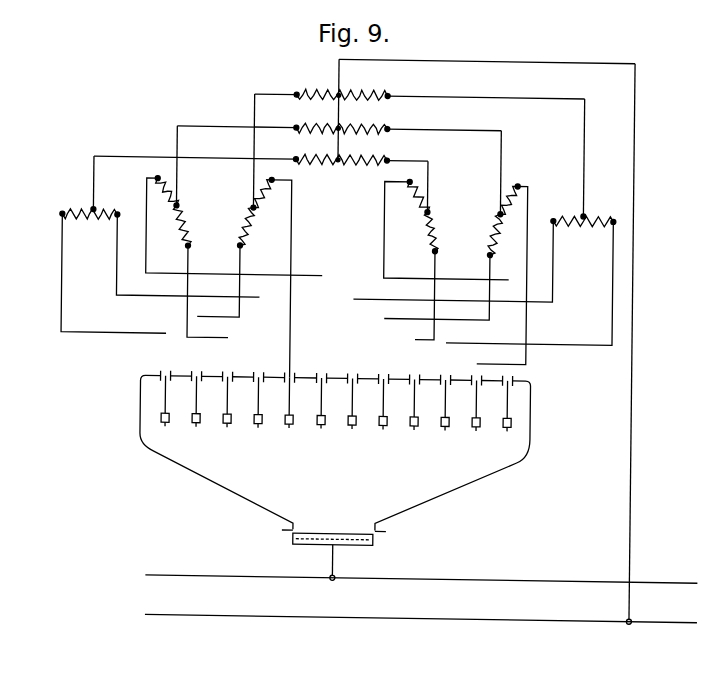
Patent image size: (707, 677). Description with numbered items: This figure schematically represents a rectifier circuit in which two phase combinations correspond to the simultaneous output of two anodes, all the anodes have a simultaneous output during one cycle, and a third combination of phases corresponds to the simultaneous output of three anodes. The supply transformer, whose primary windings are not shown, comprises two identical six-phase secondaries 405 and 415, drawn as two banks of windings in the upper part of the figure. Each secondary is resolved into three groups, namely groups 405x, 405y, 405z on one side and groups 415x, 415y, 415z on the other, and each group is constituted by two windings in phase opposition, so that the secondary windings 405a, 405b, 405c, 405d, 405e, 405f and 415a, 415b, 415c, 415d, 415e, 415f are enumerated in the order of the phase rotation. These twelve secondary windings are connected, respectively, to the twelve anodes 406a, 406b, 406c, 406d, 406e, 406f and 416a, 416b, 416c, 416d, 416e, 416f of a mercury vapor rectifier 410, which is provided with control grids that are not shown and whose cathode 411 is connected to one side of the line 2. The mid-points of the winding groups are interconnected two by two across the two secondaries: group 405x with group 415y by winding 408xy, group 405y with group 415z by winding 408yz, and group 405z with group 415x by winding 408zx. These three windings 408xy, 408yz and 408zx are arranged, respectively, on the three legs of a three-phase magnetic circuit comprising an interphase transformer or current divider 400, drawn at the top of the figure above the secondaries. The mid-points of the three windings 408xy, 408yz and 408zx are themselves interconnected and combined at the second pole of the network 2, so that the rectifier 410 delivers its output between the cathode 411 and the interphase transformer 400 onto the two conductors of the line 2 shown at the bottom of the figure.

The line 2 is at (138, 566).
The interphase transformer 400 is at (363, 340).
The six-phase secondary 405 is at (283, 152).
The secondary winding 405a is at (59, 223).
The secondary winding 405b is at (238, 279).
The secondary winding 405c is at (186, 243).
The secondary winding 405d is at (112, 220).
The secondary winding 405e is at (264, 195).
The secondary winding 405f is at (170, 203).
The winding group 405x is at (88, 211).
The winding group 405y is at (178, 203).
The winding group 405z is at (244, 227).
The anode 406a is at (164, 408).
The anode 406b is at (195, 408).
The anode 406c is at (226, 408).
The anode 406d is at (257, 409).
The anode 406e is at (288, 409).
The anode 406f is at (321, 410).
The winding 408zx is at (420, 86).
The winding 408yz is at (339, 118).
The winding 408xy is at (419, 115).
The mercury vapor rectifier 410 is at (230, 491).
The cathode 411 is at (312, 545).
The six-phase secondary 415 is at (410, 176).
The secondary winding 415a is at (554, 224).
The secondary winding 415b is at (456, 286).
The secondary winding 415c is at (432, 247).
The secondary winding 415d is at (604, 224).
The secondary winding 415e is at (512, 197).
The secondary winding 415f is at (418, 194).
The winding group 415x is at (584, 215).
The winding group 415y is at (428, 214).
The winding group 415z is at (494, 228).
The anode 416a is at (351, 410).
The anode 416b is at (382, 411).
The anode 416c is at (413, 411).
The anode 416d is at (444, 412).
The anode 416e is at (475, 412).
The anode 416f is at (507, 413).